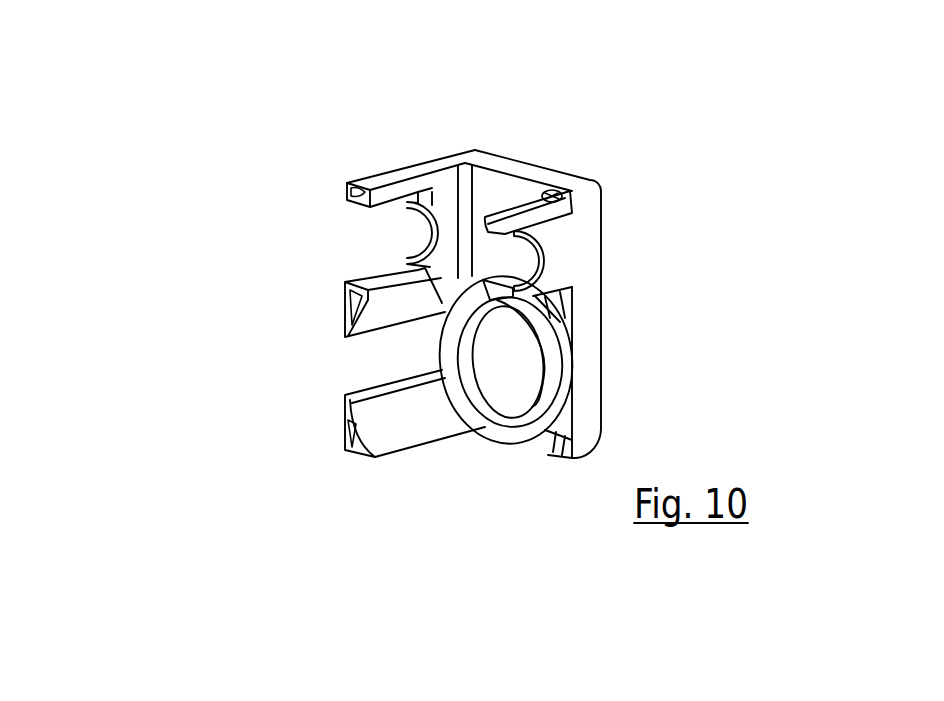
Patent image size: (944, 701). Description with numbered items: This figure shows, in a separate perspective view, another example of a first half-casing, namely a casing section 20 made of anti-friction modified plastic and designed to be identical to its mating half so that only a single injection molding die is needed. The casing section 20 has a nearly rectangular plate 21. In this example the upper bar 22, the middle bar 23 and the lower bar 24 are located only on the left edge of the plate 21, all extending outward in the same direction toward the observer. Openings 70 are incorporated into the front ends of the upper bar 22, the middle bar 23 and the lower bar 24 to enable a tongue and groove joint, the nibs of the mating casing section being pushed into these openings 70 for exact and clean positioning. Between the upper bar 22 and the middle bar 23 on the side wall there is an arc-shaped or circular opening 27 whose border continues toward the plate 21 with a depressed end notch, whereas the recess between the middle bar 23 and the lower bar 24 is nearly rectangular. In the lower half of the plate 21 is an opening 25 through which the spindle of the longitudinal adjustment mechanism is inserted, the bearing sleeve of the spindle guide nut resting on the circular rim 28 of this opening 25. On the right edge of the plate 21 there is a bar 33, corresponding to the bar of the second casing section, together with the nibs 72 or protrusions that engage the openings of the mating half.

The casing section 20 is at (601, 211).
The plate 21 is at (498, 190).
The upper bar 22 is at (385, 188).
The middle bar 23 is at (380, 315).
The lower bar 24 is at (402, 422).
The opening 25 is at (525, 355).
The arc-shaped opening 27 is at (422, 230).
The circular rim 28 is at (485, 363).
The bar 33 is at (555, 240).
The opening 70 is at (347, 188).
The nib 72 is at (560, 190).